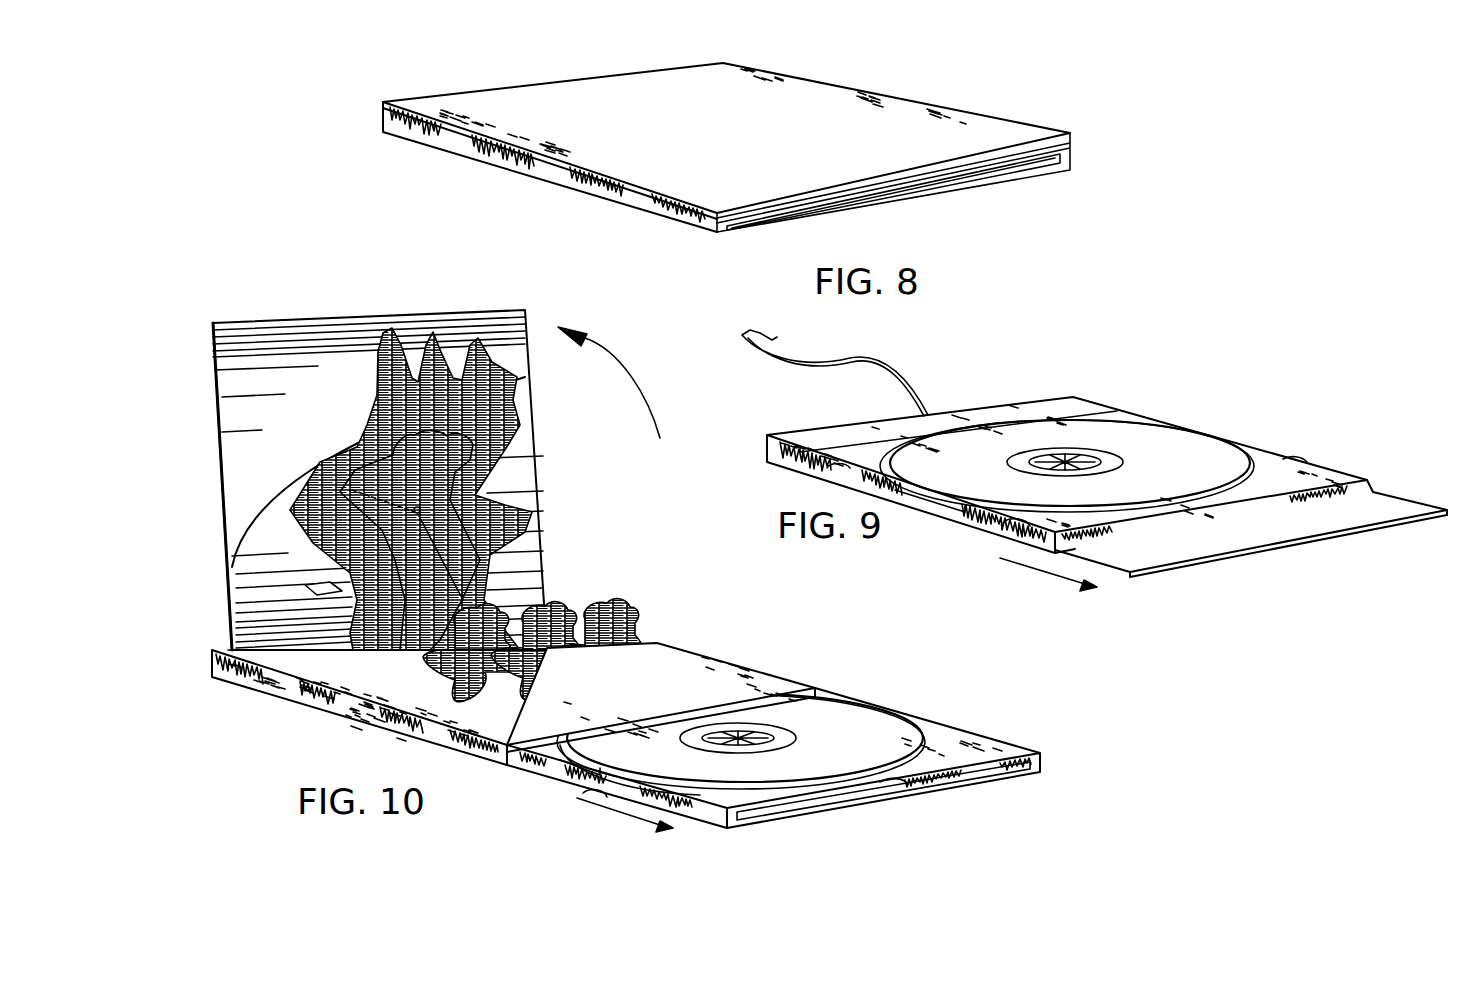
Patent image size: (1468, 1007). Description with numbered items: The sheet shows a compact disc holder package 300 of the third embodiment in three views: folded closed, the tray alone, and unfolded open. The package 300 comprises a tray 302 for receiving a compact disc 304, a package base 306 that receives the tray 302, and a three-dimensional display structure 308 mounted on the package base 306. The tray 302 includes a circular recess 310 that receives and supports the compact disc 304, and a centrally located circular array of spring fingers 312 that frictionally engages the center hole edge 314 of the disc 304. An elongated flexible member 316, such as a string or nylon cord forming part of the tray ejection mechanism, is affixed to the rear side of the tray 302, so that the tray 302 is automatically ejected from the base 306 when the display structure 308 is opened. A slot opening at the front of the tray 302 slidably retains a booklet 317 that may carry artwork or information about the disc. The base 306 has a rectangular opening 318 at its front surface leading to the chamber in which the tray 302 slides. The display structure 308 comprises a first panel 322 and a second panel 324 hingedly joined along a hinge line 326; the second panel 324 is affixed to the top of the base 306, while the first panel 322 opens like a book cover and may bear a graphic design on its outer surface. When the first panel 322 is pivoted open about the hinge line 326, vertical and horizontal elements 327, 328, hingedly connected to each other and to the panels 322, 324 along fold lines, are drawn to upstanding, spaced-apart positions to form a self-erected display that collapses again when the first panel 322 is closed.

In FIG. 8, the compact disc holder package 300 is at (742, 160).
In FIG. 10, the compact disc holder package 300 is at (607, 582).
In FIG. 8, the tray 302 is at (900, 201).
In FIG. 9, the tray 302 is at (1094, 456).
In FIG. 10, the tray 302 is at (786, 755).
In FIG. 9, the compact disc 304 is at (1170, 440).
In FIG. 10, the compact disc 304 is at (847, 713).
In FIG. 8, the package base 306 is at (482, 148).
In FIG. 10, the package base 306 is at (293, 693).
In FIG. 10, the three-dimensional display structure 308 is at (583, 581).
In FIG. 9, the circular recess 310 is at (1260, 467).
In FIG. 10, the circular recess 310 is at (917, 723).
In FIG. 9, the spring fingers 312 is at (1100, 470).
In FIG. 10, the spring fingers 312 is at (787, 743).
In FIG. 9, the center hole edge 314 is at (1020, 472).
In FIG. 10, the center hole edge 314 is at (687, 743).
In FIG. 9, the elongated flexible member 316 is at (917, 390).
In FIG. 8, the booklet 317 is at (800, 207).
In FIG. 9, the booklet 317 is at (1190, 558).
In FIG. 10, the booklet 317 is at (793, 807).
In FIG. 8, the rectangular opening 318 is at (713, 232).
In FIG. 10, the rectangular opening 318 is at (512, 760).
In FIG. 8, the first panel 322 is at (905, 108).
In FIG. 10, the first panel 322 is at (225, 382).
In FIG. 10, the second panel 324 is at (778, 680).
In FIG. 10, the hinge line 326 is at (270, 657).
In FIG. 10, the vertical elements 327 is at (427, 447).
In FIG. 10, the horizontal elements 328 is at (340, 589).